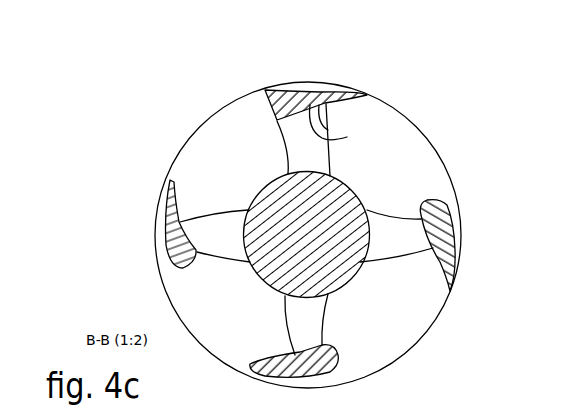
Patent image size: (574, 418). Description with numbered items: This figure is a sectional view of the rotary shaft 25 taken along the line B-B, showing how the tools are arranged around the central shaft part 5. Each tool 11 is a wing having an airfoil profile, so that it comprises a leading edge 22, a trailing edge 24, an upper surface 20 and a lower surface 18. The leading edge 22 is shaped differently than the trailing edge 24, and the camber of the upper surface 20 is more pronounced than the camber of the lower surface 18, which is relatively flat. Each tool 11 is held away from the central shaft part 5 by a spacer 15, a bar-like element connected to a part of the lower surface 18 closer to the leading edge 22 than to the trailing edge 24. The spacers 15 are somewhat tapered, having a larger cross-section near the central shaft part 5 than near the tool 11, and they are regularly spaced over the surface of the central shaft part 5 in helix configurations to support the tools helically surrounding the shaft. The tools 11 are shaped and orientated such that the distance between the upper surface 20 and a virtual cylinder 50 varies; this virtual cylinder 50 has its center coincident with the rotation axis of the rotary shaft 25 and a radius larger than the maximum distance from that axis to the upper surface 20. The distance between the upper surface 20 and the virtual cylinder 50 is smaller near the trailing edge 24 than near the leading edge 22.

The rotary shaft 25 is at (471, 60).
The virtual cylinder 50 is at (454, 189).
The central shaft part 5 is at (353, 193).
The upper surface 20 is at (316, 82).
The leading edge 22 is at (265, 90).
The trailing edge 24 is at (366, 96).
The lower surface 18 is at (344, 127).
The spacer 15 is at (213, 236).
The tool 11 is at (334, 370).